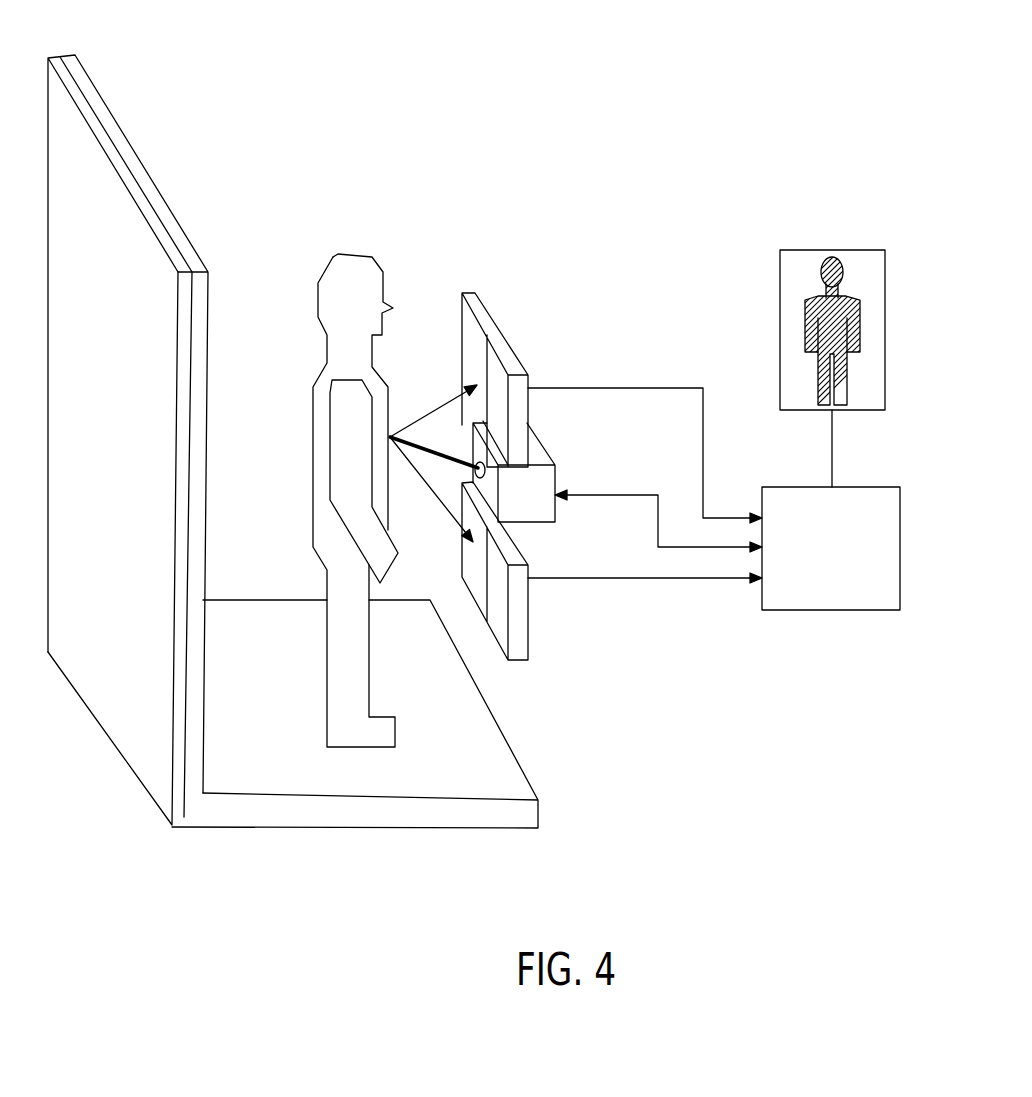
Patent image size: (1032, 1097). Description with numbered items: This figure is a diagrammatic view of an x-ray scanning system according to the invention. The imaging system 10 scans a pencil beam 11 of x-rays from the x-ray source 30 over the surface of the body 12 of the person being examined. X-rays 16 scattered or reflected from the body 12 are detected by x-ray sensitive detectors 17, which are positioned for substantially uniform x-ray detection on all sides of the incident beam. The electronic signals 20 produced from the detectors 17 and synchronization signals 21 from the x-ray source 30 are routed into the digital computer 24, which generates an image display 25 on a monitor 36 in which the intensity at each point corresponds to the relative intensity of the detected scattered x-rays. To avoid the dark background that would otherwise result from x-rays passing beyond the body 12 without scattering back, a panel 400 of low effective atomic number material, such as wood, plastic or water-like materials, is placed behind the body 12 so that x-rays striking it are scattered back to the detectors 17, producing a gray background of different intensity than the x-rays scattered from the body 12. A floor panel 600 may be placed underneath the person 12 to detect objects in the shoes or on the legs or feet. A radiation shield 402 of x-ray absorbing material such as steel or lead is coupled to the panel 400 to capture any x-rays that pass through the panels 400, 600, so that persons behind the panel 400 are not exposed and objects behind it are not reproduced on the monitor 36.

The imaging system 10 is at (651, 252).
The pencil beam 11 is at (435, 455).
The body 12 is at (370, 660).
The x-rays 16 is at (437, 410).
The x-ray sensitive detectors 17 is at (490, 303).
The electronic signals 20 is at (653, 387).
The synchronization signals 21 is at (627, 492).
The digital computer 24 is at (760, 598).
The image display 25 is at (832, 448).
The x-ray source 30 is at (545, 445).
The monitor 36 is at (887, 305).
The panel 400 is at (200, 828).
The radiation shield 402 is at (176, 828).
The floor panel 600 is at (440, 818).